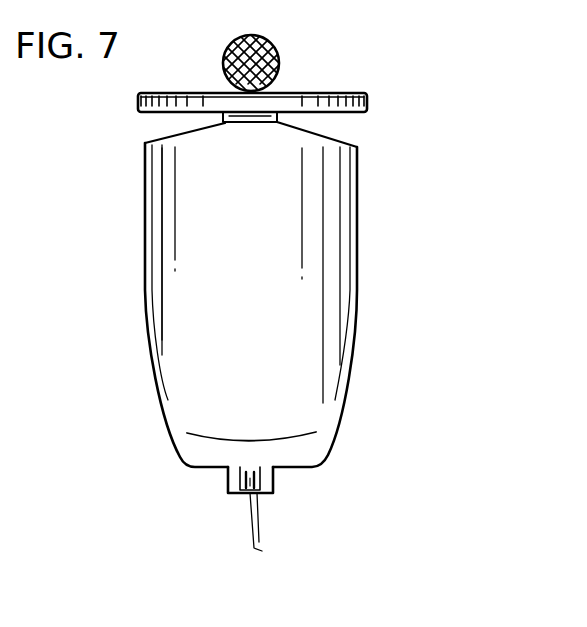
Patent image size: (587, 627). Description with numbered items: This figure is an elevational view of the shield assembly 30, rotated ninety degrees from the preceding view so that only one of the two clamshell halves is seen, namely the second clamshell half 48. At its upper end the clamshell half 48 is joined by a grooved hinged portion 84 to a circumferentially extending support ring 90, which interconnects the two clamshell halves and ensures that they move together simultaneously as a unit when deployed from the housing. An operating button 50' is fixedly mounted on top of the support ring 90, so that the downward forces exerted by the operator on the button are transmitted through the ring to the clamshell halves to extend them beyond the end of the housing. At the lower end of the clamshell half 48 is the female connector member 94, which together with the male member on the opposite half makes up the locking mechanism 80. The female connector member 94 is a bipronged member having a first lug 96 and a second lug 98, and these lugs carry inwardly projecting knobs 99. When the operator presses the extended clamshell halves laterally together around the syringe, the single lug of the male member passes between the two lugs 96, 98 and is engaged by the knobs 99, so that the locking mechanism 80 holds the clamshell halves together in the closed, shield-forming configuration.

The shield assembly 30 is at (137, 212).
The second clamshell half 48 is at (165, 265).
The operating button 50' is at (299, 50).
The locking mechanism 80 is at (208, 478).
The grooved hinged portion 84 is at (280, 124).
The support ring 90 is at (355, 97).
The female connector member 94 is at (274, 475).
The first lug 96 is at (227, 488).
The second lug 98 is at (275, 492).
The inwardly projecting knob 99 is at (274, 532).